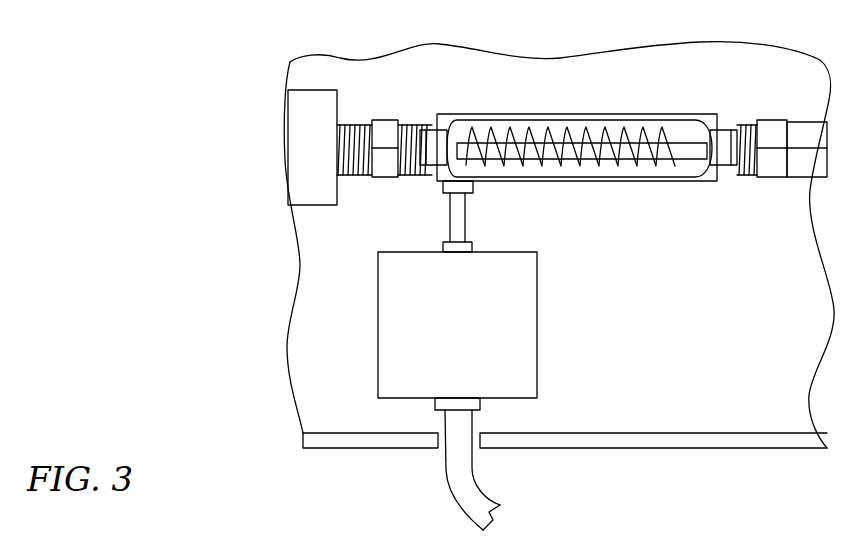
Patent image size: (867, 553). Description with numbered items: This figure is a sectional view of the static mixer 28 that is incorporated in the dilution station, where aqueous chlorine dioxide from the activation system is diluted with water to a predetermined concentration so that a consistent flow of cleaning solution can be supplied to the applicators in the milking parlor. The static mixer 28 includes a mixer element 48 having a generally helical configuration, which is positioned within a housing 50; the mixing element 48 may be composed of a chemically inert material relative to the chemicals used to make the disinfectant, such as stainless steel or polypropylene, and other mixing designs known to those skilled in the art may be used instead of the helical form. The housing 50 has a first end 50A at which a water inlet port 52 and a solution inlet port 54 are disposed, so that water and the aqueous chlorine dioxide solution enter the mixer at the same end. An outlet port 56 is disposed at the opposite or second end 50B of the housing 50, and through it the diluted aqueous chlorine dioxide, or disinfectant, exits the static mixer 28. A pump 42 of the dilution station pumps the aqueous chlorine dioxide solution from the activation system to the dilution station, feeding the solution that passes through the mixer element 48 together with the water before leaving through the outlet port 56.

The static mixer 28 is at (447, 483).
The pump 42 is at (537, 323).
The mixer element 48 is at (525, 133).
The housing 50 is at (665, 113).
The first end of the housing 50A is at (435, 192).
The second end of the housing 50B is at (715, 192).
The water inlet port 52 is at (427, 127).
The solution inlet port 54 is at (470, 190).
The outlet port 56 is at (723, 143).